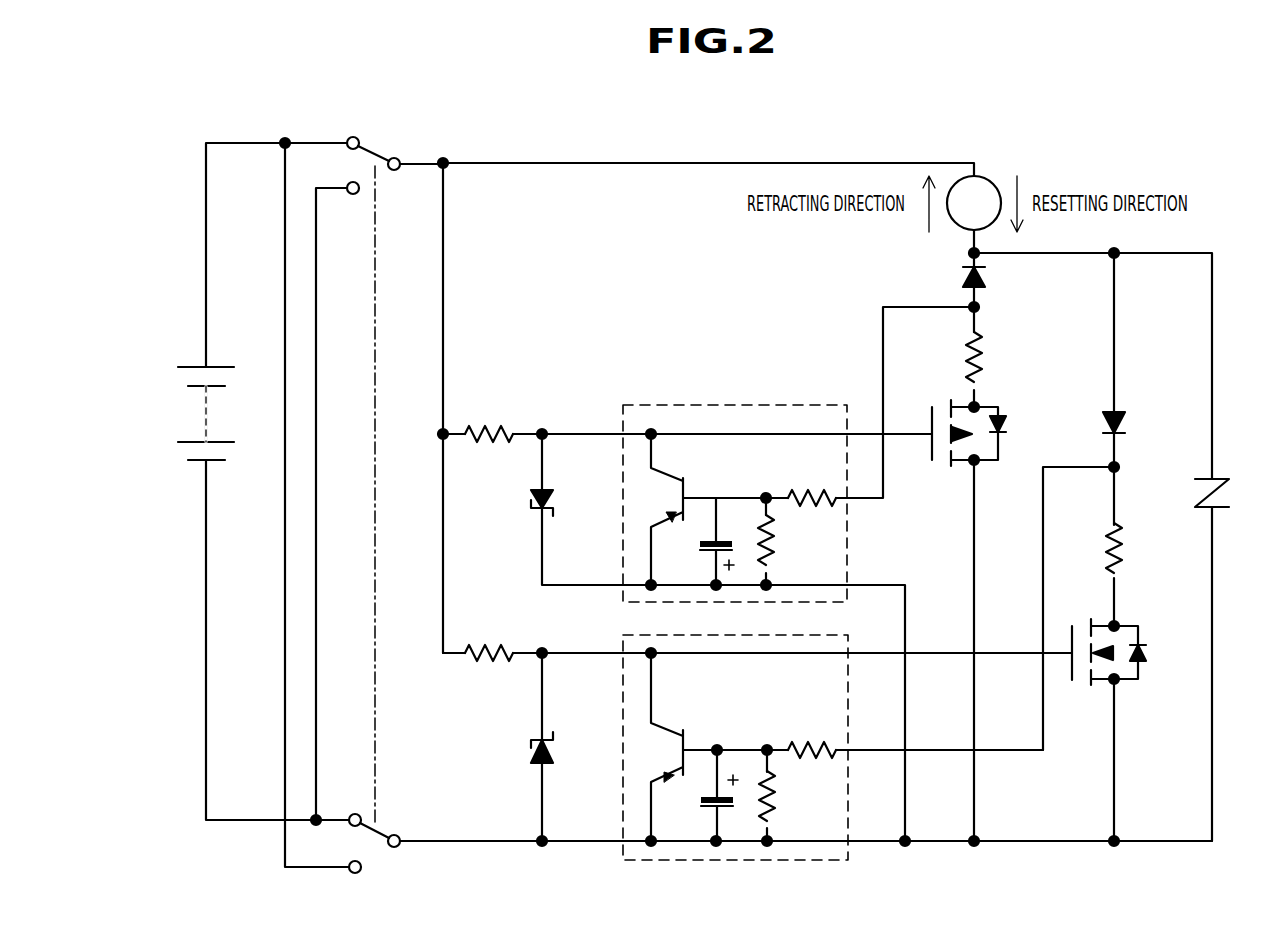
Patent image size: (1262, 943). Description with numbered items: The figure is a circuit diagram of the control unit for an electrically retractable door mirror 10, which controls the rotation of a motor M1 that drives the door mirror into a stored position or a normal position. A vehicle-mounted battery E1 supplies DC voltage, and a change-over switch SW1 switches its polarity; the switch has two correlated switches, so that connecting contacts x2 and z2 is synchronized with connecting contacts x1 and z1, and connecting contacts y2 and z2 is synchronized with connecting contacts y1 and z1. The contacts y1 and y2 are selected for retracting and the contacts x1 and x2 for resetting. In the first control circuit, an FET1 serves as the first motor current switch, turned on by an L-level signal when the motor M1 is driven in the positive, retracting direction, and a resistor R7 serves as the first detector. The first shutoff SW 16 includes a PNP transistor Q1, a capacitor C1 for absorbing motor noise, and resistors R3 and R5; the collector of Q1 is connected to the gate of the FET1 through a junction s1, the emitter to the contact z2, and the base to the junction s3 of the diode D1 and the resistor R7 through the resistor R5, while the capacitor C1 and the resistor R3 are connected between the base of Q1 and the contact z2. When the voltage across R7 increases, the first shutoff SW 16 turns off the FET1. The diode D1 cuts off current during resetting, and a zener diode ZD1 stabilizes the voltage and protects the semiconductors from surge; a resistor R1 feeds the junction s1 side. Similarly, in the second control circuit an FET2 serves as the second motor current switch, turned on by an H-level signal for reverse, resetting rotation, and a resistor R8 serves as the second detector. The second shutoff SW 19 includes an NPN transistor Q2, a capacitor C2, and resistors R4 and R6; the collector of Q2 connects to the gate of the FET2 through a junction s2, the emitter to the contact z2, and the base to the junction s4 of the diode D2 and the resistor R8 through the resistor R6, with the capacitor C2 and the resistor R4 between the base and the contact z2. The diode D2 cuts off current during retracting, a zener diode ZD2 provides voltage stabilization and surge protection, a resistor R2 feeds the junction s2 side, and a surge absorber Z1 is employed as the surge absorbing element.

The control unit for an electrically retractable door mirror 10 is at (658, 156).
The first shutoff SW 16 is at (752, 403).
The second shutoff SW 19 is at (750, 868).
The change-over switch SW1 is at (372, 152).
The battery E1 is at (202, 413).
The motor M1 is at (985, 172).
The diode D1 is at (959, 280).
The diode D2 is at (1128, 360).
The resistor R1 is at (490, 419).
The resistor R2 is at (492, 638).
The resistor R3 is at (760, 541).
The resistor R4 is at (761, 793).
The resistor R5 is at (803, 483).
The resistor R6 is at (905, 735).
The resistor R7 is at (989, 357).
The resistor R8 is at (1129, 546).
The zener diode ZD1 is at (698, 637).
The zener diode ZD2 is at (522, 747).
The PNP transistor Q1 is at (676, 512).
The NPN transistor Q2 is at (677, 747).
The capacitor C1 is at (704, 544).
The capacitor C2 is at (706, 793).
The FET FET1 is at (991, 620).
The FET FET2 is at (1133, 730).
The surge absorber Z1 is at (1226, 493).
The junction s1 is at (651, 422).
The junction s2 is at (651, 641).
The junction s3 is at (987, 307).
The junction s4 is at (1127, 469).
The contact x1 is at (348, 126).
The contact x2 is at (350, 804).
The contact y1 is at (348, 205).
The contact y2 is at (351, 884).
The contact z1 is at (394, 180).
The contact z2 is at (398, 857).